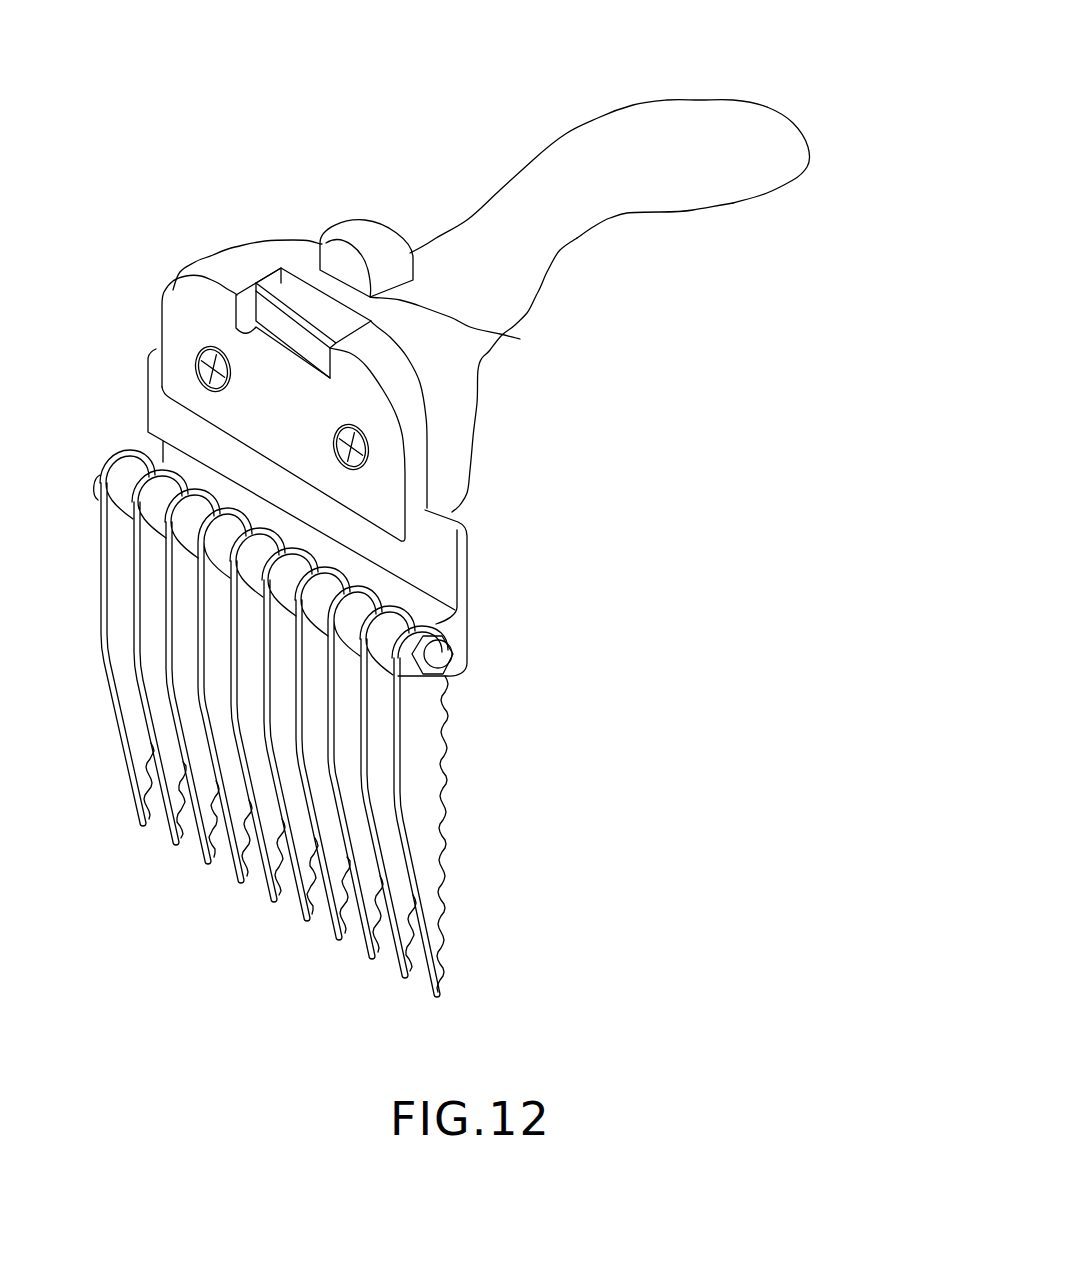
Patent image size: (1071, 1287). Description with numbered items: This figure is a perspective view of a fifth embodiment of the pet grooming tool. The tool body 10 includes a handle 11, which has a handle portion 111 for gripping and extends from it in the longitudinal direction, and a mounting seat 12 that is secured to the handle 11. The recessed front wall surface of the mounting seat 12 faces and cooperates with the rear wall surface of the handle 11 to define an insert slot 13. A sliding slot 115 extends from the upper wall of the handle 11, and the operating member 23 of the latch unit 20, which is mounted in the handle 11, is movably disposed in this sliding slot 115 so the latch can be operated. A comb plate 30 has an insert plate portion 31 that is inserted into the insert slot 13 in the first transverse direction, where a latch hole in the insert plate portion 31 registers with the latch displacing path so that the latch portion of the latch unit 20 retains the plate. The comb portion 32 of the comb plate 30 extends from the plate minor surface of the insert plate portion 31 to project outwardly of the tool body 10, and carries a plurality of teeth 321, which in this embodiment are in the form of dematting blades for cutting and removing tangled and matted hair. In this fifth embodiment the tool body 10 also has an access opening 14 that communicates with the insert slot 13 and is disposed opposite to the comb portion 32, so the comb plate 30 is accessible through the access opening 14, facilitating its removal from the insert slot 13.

The tool body 10 is at (589, 263).
The handle 11 is at (609, 133).
The handle portion 111 is at (707, 107).
The sliding slot 115 is at (520, 339).
The mounting seat 12 is at (251, 325).
The insert slot 13 is at (235, 318).
The access opening 14 is at (292, 281).
The latch unit 20 is at (367, 219).
The operating member 23 is at (350, 226).
The comb plate 30 is at (485, 571).
The insert plate portion 31 is at (310, 283).
The comb portion 32 is at (357, 723).
The teeth 321 is at (428, 849).